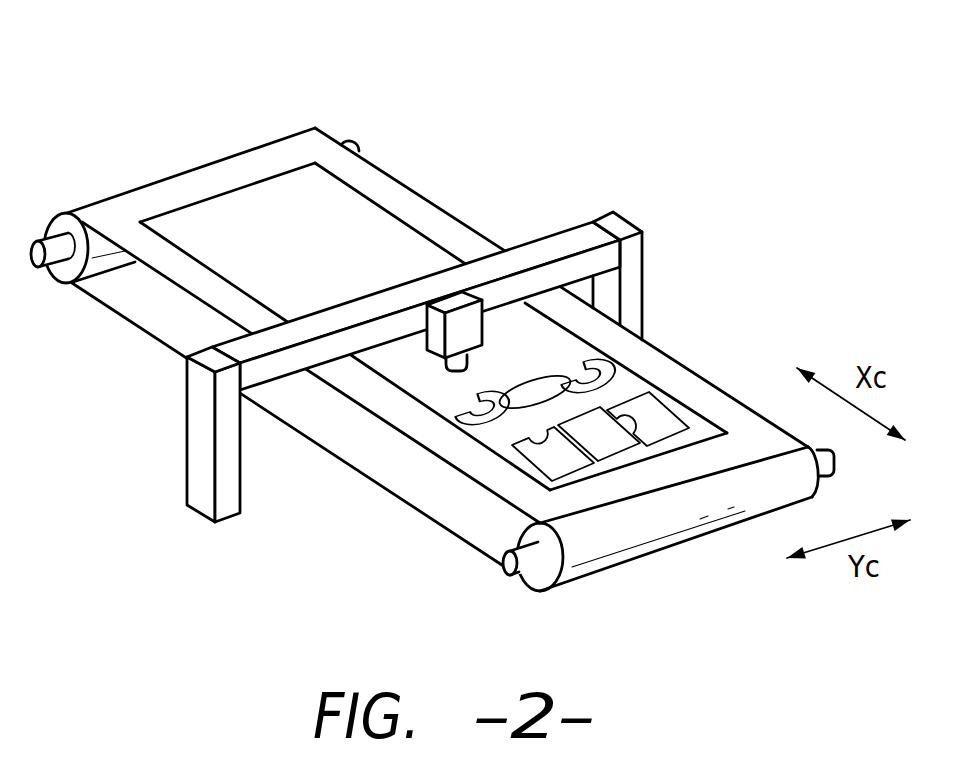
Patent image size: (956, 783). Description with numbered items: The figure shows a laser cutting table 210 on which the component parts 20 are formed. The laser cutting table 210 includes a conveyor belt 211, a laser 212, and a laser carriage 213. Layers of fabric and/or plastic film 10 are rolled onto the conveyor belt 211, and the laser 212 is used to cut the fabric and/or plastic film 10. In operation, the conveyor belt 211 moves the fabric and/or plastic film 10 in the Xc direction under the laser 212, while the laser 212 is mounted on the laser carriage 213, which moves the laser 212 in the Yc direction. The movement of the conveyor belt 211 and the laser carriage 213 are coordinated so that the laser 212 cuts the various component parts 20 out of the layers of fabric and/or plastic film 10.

The fabric and/or plastic film 10 is at (297, 190).
The component parts 20 is at (637, 410).
The laser cutting table 210 is at (416, 195).
The conveyor belt 211 is at (189, 284).
The laser 212 is at (457, 305).
The laser carriage 213 is at (582, 238).